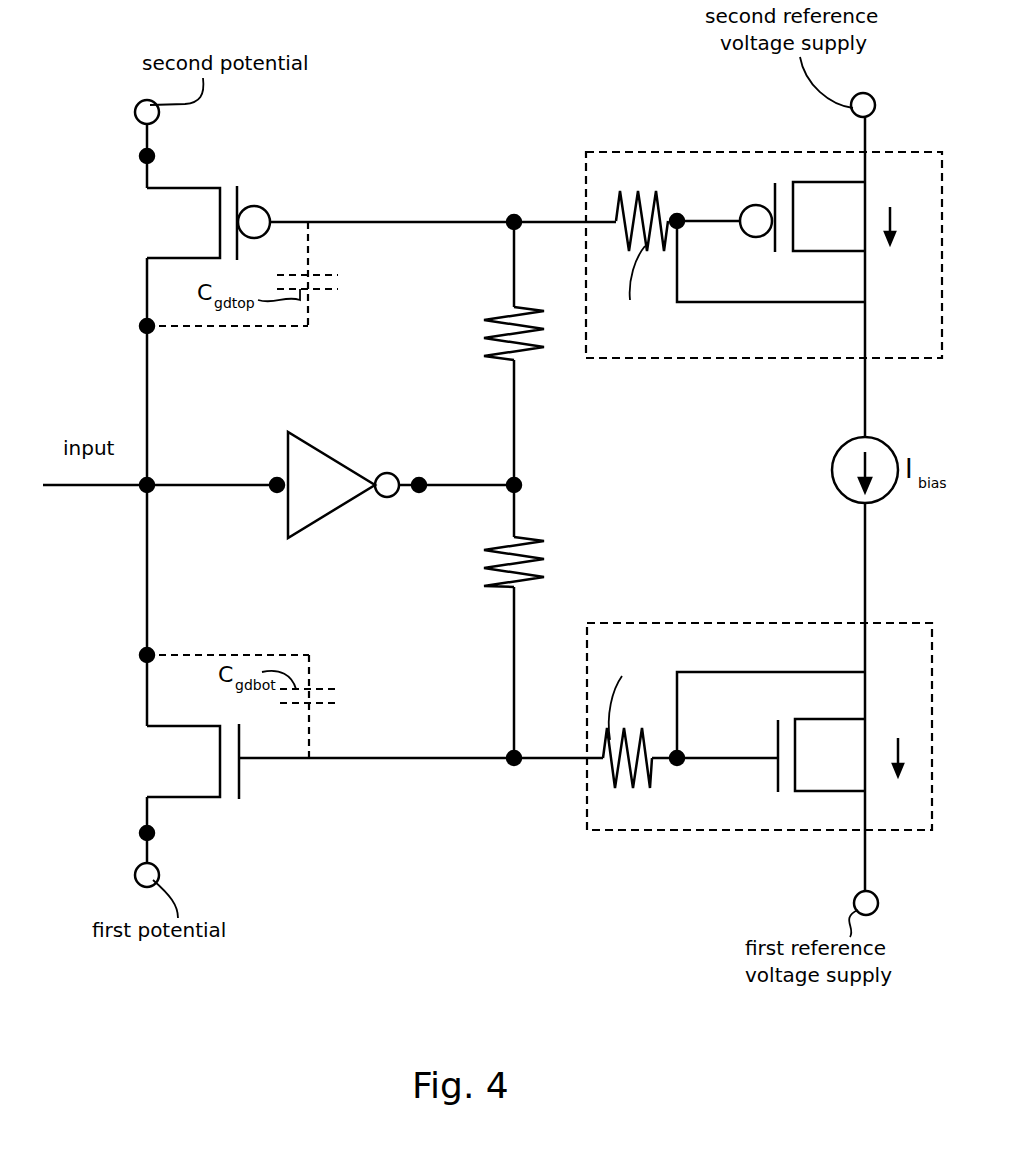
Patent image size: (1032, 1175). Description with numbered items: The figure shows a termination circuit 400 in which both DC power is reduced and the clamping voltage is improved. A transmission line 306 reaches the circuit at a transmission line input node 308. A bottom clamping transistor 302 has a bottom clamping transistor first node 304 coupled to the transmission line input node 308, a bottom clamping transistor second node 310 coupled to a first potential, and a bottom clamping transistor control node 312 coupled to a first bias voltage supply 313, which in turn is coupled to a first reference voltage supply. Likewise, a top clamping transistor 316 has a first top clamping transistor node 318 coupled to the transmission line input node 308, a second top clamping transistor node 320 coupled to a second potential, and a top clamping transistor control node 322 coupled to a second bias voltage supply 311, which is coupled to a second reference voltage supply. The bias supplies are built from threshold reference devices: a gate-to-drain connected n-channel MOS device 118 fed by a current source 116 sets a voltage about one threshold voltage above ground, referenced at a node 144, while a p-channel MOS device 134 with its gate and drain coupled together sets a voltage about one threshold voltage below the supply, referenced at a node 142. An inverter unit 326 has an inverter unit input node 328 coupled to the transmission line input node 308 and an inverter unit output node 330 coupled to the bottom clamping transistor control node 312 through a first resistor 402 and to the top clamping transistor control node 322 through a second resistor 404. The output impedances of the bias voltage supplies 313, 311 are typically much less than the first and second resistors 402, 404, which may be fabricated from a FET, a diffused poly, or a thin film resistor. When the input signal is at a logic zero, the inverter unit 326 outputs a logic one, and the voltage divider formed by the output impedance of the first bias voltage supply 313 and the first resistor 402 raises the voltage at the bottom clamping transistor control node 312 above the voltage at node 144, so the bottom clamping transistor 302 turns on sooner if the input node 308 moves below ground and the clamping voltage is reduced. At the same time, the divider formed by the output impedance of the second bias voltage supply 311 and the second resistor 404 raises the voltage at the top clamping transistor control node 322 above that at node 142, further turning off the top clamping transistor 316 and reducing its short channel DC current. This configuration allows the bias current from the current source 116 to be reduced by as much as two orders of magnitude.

The termination circuit 400 is at (306, 989).
The bottom clamping transistor 302 is at (220, 764).
The bottom clamping transistor first node 304 is at (140, 656).
The transmission line 306 is at (88, 490).
The transmission line input node 308 is at (152, 490).
The bottom clamping transistor second node 310 is at (140, 834).
The second bias voltage supply 311 is at (764, 292).
The bottom clamping transistor control node 312 is at (520, 765).
The first bias voltage supply 313 is at (759, 688).
The top clamping transistor 316 is at (220, 218).
The first top clamping transistor node 318 is at (140, 327).
The second top clamping transistor node 320 is at (140, 158).
The top clamping transistor control node 322 is at (513, 212).
The inverter unit 326 is at (343, 485).
The inverter unit input node 328 is at (270, 480).
The inverter unit output node 330 is at (421, 478).
The first resistor 402 is at (524, 542).
The second resistor 404 is at (507, 316).
The current source 116 is at (832, 470).
The n-channel MOS device 118 is at (800, 745).
The p-channel MOS device 134 is at (795, 212).
The node 142 is at (677, 214).
The node 144 is at (677, 766).